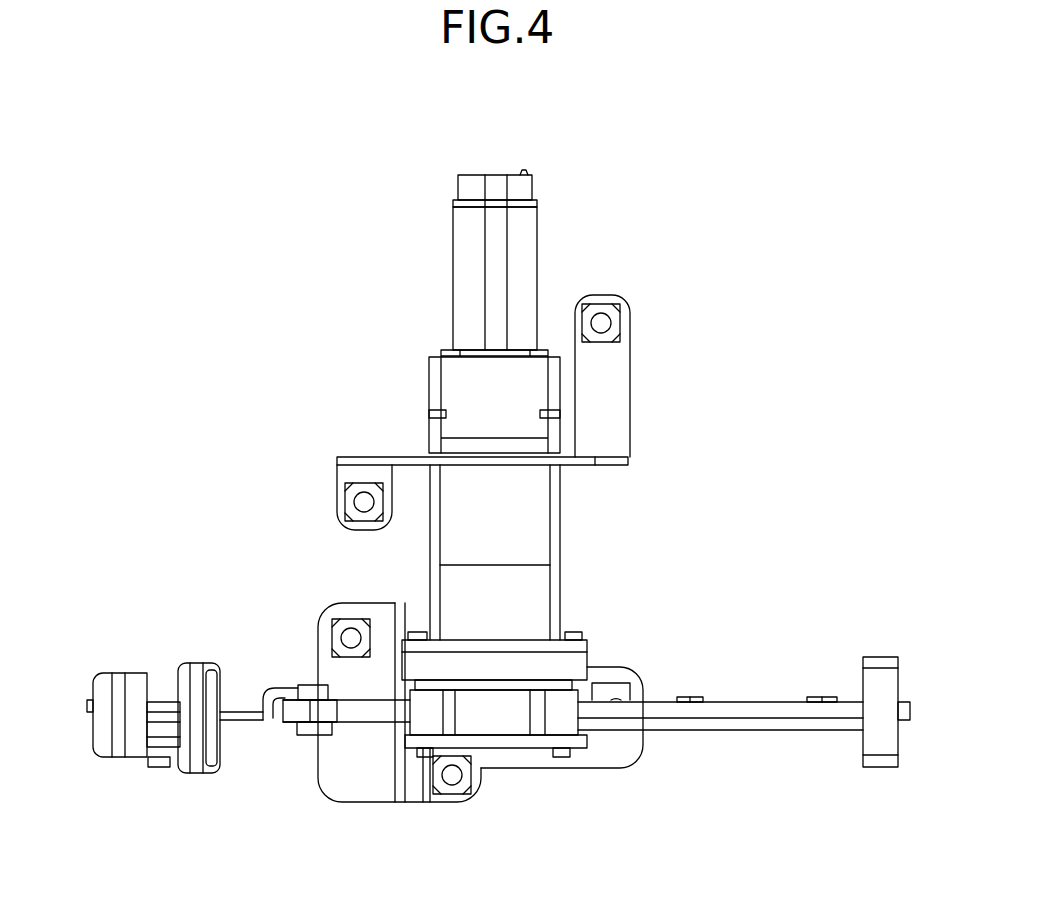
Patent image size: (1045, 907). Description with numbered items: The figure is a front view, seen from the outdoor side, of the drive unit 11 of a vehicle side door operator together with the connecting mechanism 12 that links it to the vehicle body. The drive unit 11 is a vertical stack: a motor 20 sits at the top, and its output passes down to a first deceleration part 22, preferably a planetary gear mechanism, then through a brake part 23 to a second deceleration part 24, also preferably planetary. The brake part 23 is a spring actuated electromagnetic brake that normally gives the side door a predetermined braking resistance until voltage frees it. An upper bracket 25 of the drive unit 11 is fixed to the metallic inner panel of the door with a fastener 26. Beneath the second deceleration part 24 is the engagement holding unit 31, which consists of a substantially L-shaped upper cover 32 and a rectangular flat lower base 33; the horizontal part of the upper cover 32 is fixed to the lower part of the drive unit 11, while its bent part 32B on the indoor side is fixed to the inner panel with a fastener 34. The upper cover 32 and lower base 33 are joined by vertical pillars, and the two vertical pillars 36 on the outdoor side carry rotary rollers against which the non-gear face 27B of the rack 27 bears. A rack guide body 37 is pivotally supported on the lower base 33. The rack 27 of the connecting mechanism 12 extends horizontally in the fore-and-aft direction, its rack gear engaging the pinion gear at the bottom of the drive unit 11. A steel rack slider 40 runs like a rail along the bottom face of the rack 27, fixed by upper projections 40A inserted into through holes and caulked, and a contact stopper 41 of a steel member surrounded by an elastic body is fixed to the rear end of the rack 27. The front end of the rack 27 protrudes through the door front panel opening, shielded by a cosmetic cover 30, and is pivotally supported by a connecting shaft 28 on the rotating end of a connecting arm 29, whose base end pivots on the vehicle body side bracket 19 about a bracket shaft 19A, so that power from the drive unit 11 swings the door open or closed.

The drive unit 11 is at (661, 203).
The connecting mechanism 12 is at (695, 712).
The vehicle body side bracket 19 is at (93, 673).
The bracket shaft 19A is at (160, 768).
The motor 20 is at (465, 230).
The first deceleration part 22 is at (465, 382).
The brake part 23 is at (530, 500).
The second deceleration part 24 is at (540, 598).
The upper bracket 25 is at (620, 395).
The fastener 26 is at (620, 318).
The rack 27 is at (740, 705).
The non-gear face 27B is at (612, 705).
The connecting shaft 28 is at (300, 740).
The connecting arm 29 is at (240, 737).
The cosmetic cover 30 is at (195, 665).
The engagement holding unit 31 is at (568, 658).
The upper cover 32 is at (485, 690).
The bent part 32B is at (330, 668).
The lower base 33 is at (545, 740).
The fastener 34 is at (345, 622).
The vertical pillar 36 is at (420, 715).
The rack guide body 37 is at (505, 715).
The rack slider 40 is at (775, 728).
The upper projection 40A is at (820, 697).
The contact stopper 41 is at (878, 677).